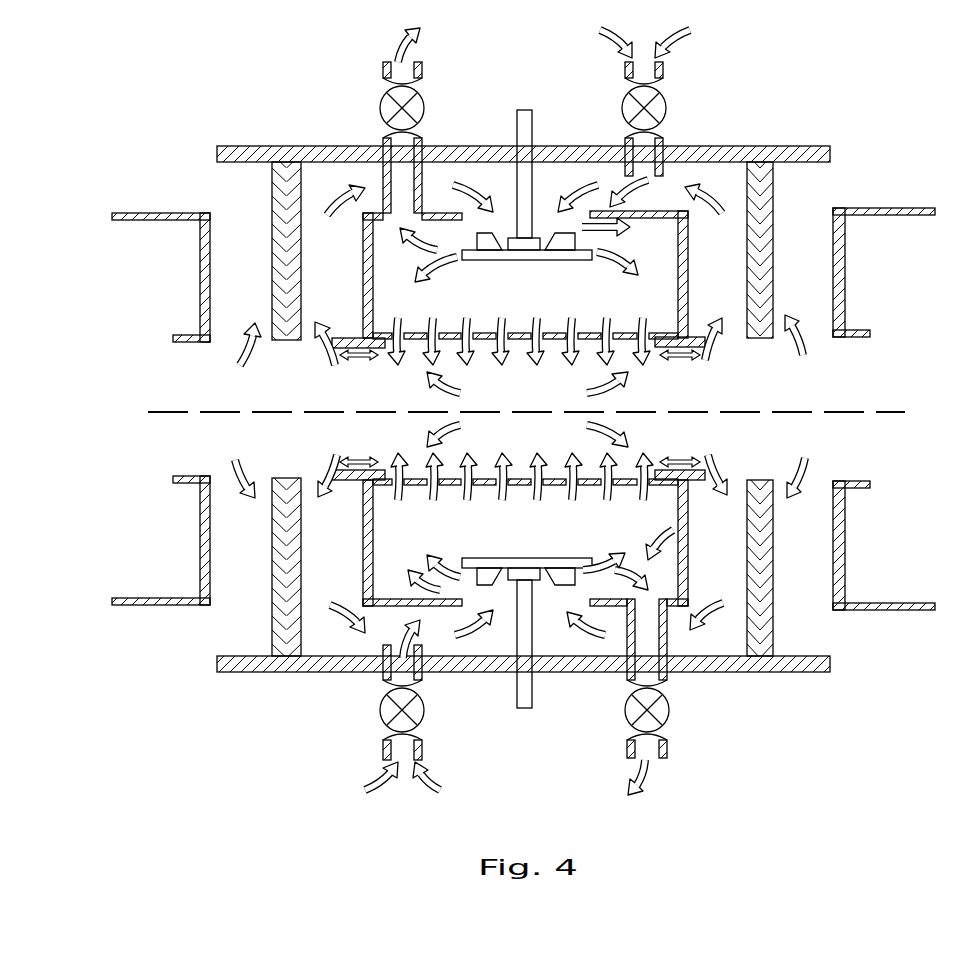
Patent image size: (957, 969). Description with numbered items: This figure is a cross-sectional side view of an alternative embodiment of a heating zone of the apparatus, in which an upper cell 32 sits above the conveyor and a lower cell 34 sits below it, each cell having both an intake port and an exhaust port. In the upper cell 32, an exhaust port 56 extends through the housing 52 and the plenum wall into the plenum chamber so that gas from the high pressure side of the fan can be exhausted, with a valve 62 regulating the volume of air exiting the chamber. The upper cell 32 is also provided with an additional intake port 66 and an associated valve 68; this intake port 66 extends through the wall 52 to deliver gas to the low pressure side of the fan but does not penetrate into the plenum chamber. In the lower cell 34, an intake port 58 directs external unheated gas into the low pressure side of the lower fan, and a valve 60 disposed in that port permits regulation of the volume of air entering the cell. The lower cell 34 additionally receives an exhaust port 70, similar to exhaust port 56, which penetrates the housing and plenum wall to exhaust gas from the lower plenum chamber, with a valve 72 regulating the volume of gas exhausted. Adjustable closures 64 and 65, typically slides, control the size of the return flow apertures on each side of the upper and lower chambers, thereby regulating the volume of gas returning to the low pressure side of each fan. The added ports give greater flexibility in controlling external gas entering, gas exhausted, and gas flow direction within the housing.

The upper heater cell 32 is at (523, 203).
The lower heater cell 34 is at (261, 704).
The housing 52 is at (735, 138).
The exhaust port 56 is at (395, 224).
The intake port 58 is at (391, 648).
The valve 60 is at (421, 686).
The valve 62 is at (425, 167).
The closure 64 is at (338, 336).
The closure 65 is at (340, 482).
The intake port 66 is at (652, 172).
The valve 68 is at (669, 132).
The exhaust port 70 is at (658, 598).
The valve 72 is at (670, 657).